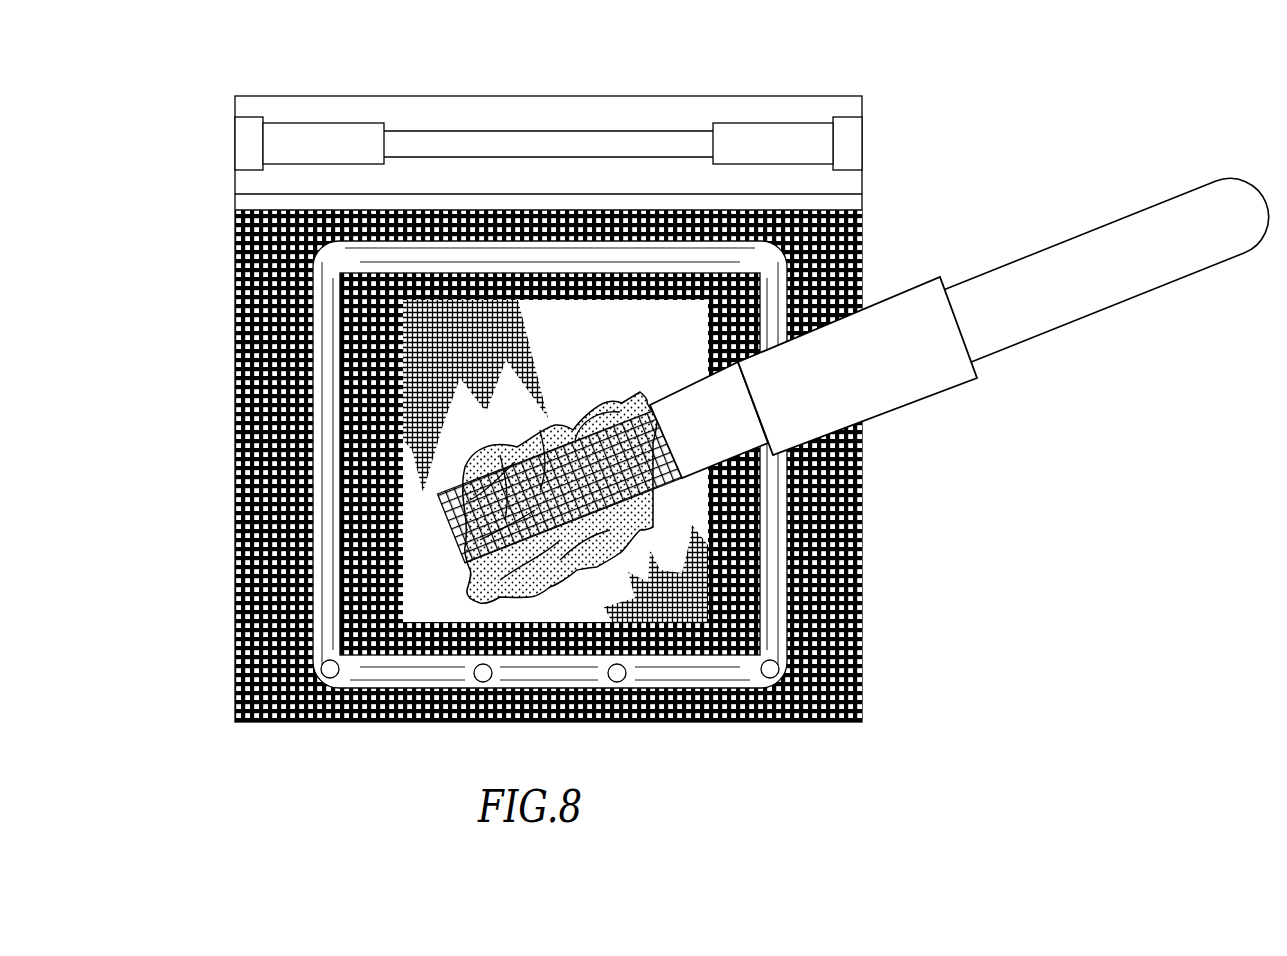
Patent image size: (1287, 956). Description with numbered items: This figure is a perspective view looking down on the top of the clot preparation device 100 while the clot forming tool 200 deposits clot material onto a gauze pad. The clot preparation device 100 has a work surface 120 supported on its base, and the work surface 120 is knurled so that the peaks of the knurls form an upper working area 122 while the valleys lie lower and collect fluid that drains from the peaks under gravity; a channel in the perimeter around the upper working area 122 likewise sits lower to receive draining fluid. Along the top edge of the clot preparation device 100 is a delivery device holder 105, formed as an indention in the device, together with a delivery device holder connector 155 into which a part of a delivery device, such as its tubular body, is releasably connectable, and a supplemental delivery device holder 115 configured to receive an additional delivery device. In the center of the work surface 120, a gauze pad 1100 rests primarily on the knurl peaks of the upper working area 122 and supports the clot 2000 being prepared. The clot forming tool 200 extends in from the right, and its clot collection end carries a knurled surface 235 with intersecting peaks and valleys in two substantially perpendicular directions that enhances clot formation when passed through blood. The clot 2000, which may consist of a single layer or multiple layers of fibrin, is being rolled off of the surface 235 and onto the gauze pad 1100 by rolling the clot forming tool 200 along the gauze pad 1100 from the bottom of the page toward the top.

The clot preparation device 100 is at (862, 566).
The delivery device holder 105 is at (483, 148).
The delivery device holder connector 155 is at (770, 140).
The supplemental delivery device holder 115 is at (856, 204).
The work surface 120 is at (656, 283).
The upper working area 122 is at (578, 642).
The gauze pad 1100 is at (516, 330).
The clot forming tool 200 is at (905, 300).
The clot 2000 is at (662, 414).
The surface 235 is at (560, 486).